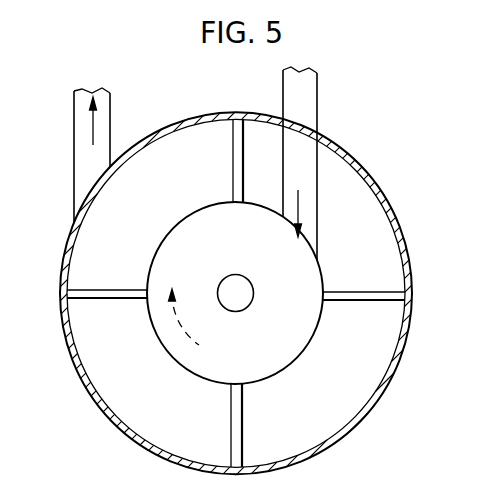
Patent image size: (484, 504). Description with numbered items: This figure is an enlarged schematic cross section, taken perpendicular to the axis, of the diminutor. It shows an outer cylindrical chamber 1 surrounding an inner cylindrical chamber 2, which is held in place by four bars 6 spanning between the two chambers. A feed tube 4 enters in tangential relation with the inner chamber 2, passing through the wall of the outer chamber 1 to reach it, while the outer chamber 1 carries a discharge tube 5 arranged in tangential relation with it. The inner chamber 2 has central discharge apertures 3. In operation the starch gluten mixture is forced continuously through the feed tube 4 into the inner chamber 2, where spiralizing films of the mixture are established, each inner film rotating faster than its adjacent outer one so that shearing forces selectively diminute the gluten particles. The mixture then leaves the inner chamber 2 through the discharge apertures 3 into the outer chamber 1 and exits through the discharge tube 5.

The outer cylindrical chamber 1 is at (369, 179).
The inner cylindrical chamber 2 is at (323, 274).
The central discharge apertures 3 is at (254, 292).
The feed tube 4 is at (295, 217).
The discharge tube 5 is at (106, 121).
The bars 6 is at (233, 156).